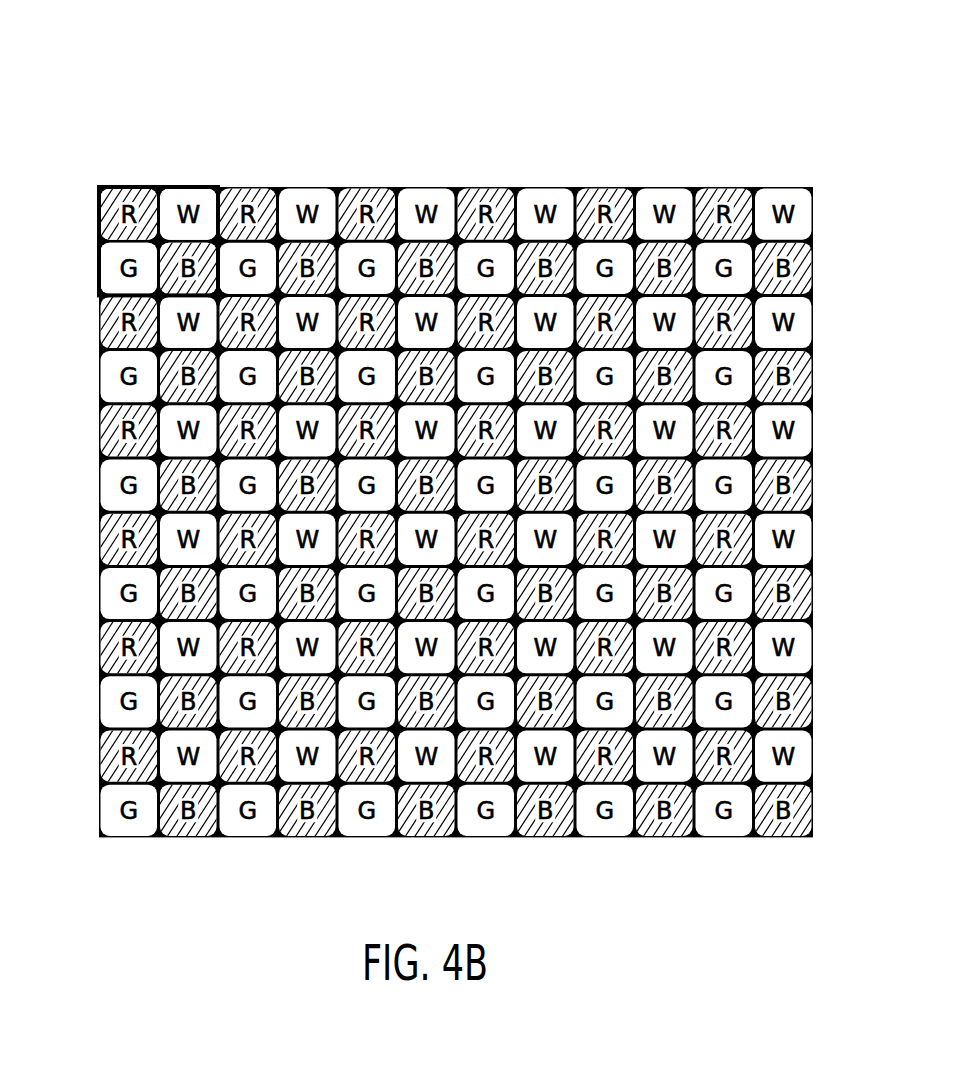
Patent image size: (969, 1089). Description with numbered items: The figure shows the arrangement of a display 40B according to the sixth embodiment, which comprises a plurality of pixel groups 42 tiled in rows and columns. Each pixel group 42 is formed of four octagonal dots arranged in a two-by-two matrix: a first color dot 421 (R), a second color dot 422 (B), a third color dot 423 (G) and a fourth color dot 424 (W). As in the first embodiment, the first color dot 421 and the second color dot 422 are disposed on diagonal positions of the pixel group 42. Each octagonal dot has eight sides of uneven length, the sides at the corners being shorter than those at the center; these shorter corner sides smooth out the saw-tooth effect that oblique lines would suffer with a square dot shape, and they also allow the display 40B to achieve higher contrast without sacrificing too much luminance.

The display 40B is at (453, 422).
The pixel group 42 is at (133, 170).
The first color dot 421 is at (140, 196).
The second color dot 422 is at (157, 285).
The third color dot 423 is at (107, 256).
The fourth color dot 424 is at (176, 197).